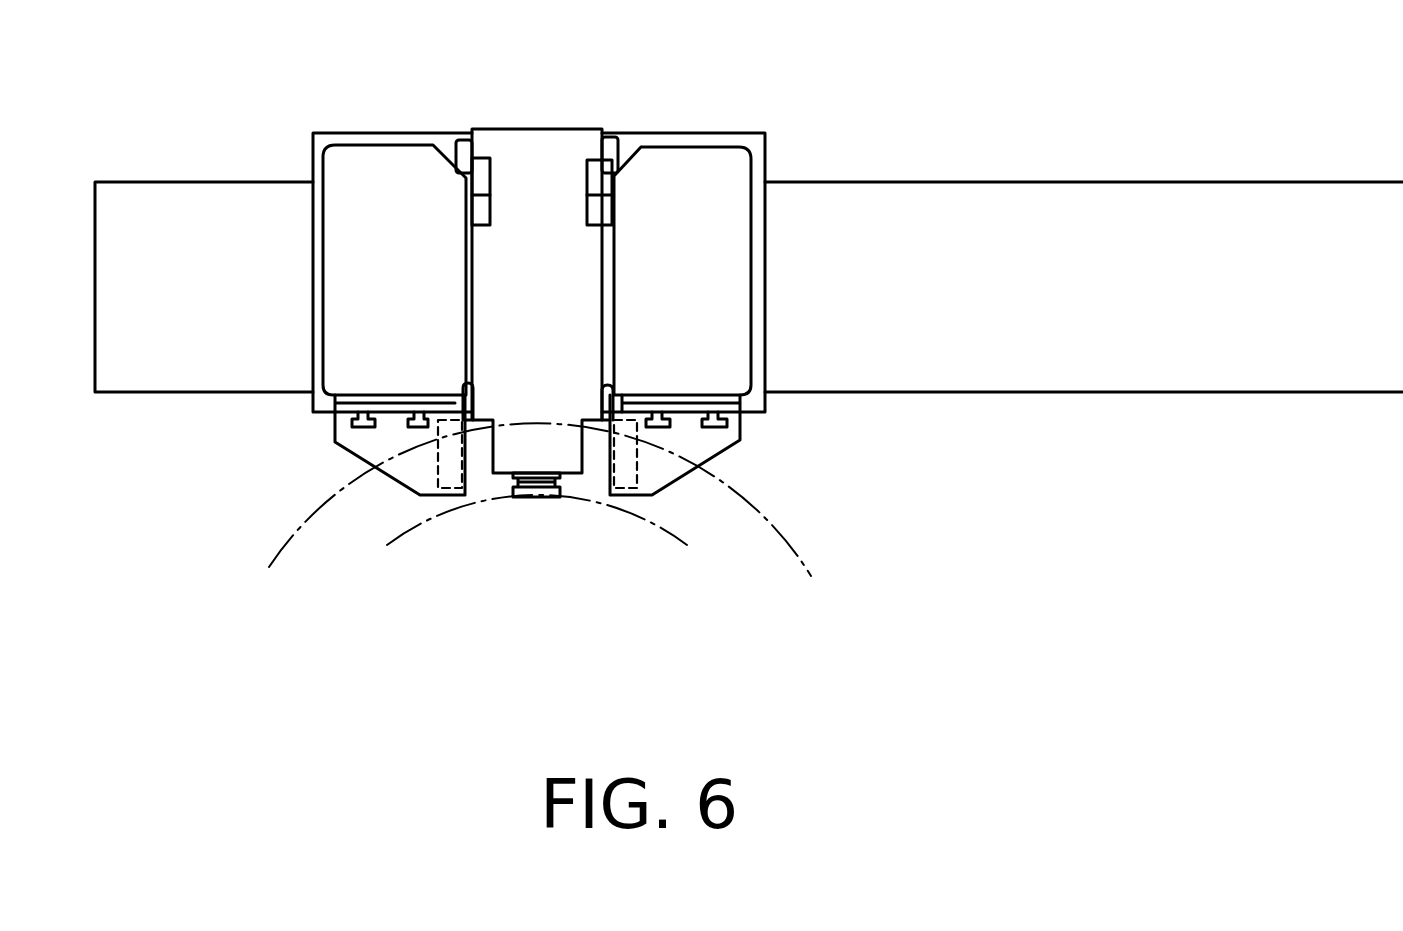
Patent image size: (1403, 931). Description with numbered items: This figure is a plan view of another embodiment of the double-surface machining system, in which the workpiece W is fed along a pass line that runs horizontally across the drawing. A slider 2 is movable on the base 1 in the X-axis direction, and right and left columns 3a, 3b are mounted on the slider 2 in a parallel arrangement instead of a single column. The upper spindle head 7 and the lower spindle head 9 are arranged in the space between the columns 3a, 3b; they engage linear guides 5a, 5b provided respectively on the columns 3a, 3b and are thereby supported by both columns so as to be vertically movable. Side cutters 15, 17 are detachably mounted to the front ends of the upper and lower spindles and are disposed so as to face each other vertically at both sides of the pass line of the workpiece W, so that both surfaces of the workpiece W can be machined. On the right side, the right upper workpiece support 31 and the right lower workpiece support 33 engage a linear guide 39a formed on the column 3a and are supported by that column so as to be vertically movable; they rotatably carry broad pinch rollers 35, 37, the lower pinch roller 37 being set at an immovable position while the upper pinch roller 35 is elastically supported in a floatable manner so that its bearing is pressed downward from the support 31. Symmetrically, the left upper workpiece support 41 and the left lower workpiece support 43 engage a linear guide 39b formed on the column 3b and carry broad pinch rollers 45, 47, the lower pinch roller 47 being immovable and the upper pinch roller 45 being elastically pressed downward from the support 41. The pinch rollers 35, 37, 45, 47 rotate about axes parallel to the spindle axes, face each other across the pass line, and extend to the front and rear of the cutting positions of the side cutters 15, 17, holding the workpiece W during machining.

The base 1 is at (196, 205).
The slider 2 is at (345, 132).
The right column 3a is at (720, 157).
The left column 3b is at (410, 160).
The linear guide 5a is at (615, 137).
The linear guide 5b is at (486, 150).
The upper spindle head 7 is at (544, 261).
The lower spindle head 9 is at (550, 155).
The side cutter 15 is at (550, 524).
The side cutter 17 is at (533, 497).
The right upper workpiece support 31 is at (682, 505).
The right lower workpiece support 33 is at (685, 466).
The upper pinch roller 35 is at (608, 536).
The lower pinch roller 37 is at (625, 483).
The linear guide 39a is at (745, 412).
The linear guide 39b is at (418, 412).
The left upper workpiece support 41 is at (327, 445).
The left lower workpiece support 43 is at (342, 446).
The upper pinch roller 45 is at (450, 518).
The lower pinch roller 47 is at (441, 483).
The workpiece W is at (778, 531).